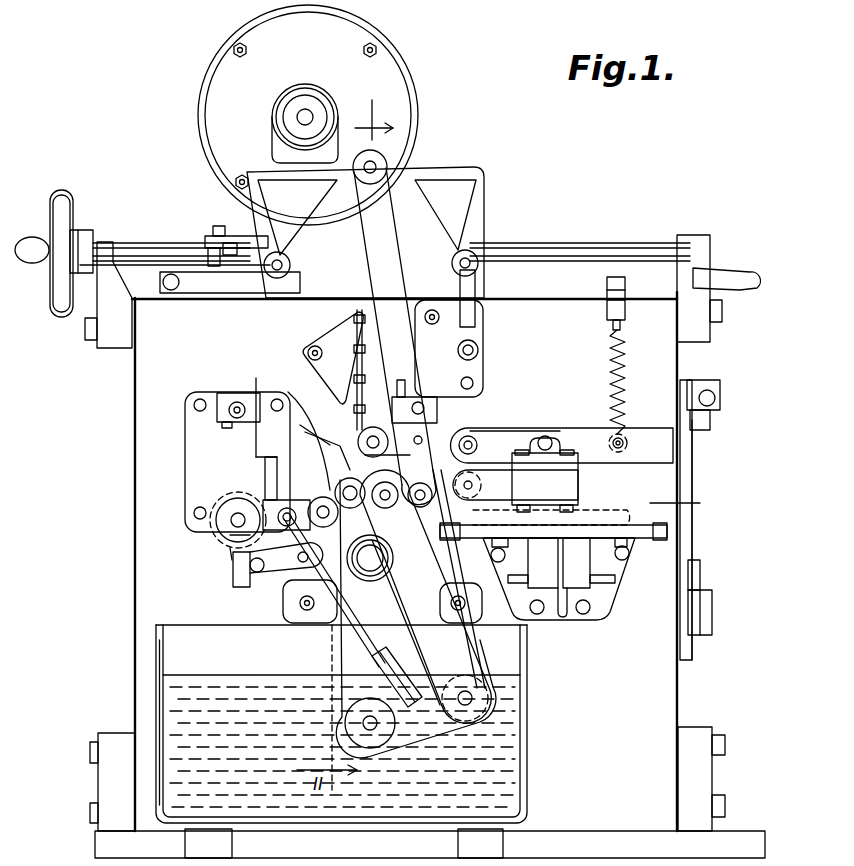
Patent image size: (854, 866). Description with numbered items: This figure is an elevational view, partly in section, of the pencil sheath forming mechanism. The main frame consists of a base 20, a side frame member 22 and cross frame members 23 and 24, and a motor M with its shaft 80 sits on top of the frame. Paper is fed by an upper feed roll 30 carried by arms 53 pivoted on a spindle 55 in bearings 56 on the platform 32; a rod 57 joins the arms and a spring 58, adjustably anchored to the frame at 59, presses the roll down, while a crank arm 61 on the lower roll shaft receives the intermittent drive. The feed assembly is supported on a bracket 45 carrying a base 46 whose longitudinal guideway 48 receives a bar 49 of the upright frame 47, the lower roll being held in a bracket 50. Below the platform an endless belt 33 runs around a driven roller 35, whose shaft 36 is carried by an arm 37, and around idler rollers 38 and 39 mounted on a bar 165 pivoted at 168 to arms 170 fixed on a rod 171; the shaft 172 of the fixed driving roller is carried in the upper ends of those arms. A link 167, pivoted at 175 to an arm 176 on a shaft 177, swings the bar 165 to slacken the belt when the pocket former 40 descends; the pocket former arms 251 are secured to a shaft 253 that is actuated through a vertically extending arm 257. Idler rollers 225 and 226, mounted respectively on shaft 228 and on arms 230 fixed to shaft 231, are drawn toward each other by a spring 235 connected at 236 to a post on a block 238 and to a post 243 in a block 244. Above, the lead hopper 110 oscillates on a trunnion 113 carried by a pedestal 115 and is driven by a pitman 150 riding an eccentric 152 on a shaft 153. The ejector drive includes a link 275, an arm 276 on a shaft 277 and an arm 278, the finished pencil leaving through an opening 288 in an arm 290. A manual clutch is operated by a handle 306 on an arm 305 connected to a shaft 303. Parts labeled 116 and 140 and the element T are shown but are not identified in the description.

The base 20 is at (566, 541).
The side frame member 22 is at (140, 622).
The cross frame member 23 is at (113, 335).
The cross frame member 24 is at (705, 330).
The upper paper feed roll 30 is at (490, 426).
The platform 32 is at (645, 455).
The endless belt 33 is at (470, 635).
The roller 35 is at (352, 485).
The shaft 36 is at (310, 500).
The arm 37 is at (292, 523).
The idler roller 38 is at (500, 720).
The idler roller 39 is at (348, 710).
The pocket former 40 is at (365, 450).
The bracket 45 is at (600, 597).
The base 46 is at (655, 538).
The upright frame 47 is at (645, 503).
The longitudinal guideway 48 is at (632, 522).
The downwardly extending bar 49 is at (480, 486).
The bracket 50 is at (560, 487).
The arm 53 is at (540, 436).
The spindle 55 is at (553, 438).
The bearings 56 is at (548, 432).
The rod 57 is at (625, 438).
The spring 58 is at (625, 362).
The adjustable spring anchorage 59 is at (607, 305).
The crank arm 61 is at (458, 540).
The motor shaft 80 is at (300, 118).
The hopper 110 is at (485, 212).
The trunnion 113 is at (375, 165).
The pedestal 115 is at (390, 235).
The pin 116 is at (393, 450).
The bracket 140 is at (335, 368).
The pitman 150 is at (475, 300).
The eccentric 152 is at (478, 348).
The shaft 153 is at (478, 356).
The bar 165 is at (472, 705).
The link 167 is at (393, 655).
The pivot 168 is at (527, 652).
The arm 170 is at (412, 672).
The rod 171 is at (372, 568).
The shaft 172 is at (385, 505).
The pivot 175 is at (300, 563).
The arm 176 is at (255, 572).
The shaft 177 is at (233, 575).
The idler roller 225 is at (430, 570).
The idler roller 226 is at (265, 490).
The shaft 228 is at (480, 392).
The arms 230 is at (300, 427).
The shaft 231 is at (230, 406).
The spring 235 is at (318, 436).
The spring connection 236 is at (420, 488).
The block 238 is at (412, 395).
The post 243 is at (256, 378).
The block 244 is at (237, 402).
The arm 251 is at (302, 422).
The shaft 253 is at (236, 528).
The vertically extending arm 257 is at (385, 370).
The link 275 is at (705, 592).
The arm 276 is at (712, 620).
The shaft 277 is at (695, 485).
The arm 278 is at (715, 392).
The opening 288 is at (233, 556).
The arm 290 is at (230, 520).
The shaft 303 is at (197, 297).
The arm 305 is at (252, 288).
The handle 306 is at (745, 272).
The tank T is at (155, 659).